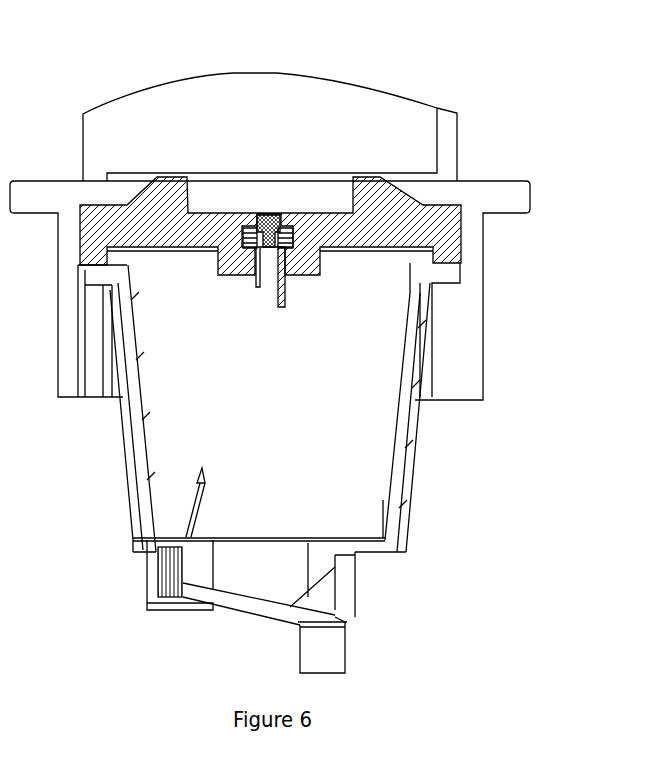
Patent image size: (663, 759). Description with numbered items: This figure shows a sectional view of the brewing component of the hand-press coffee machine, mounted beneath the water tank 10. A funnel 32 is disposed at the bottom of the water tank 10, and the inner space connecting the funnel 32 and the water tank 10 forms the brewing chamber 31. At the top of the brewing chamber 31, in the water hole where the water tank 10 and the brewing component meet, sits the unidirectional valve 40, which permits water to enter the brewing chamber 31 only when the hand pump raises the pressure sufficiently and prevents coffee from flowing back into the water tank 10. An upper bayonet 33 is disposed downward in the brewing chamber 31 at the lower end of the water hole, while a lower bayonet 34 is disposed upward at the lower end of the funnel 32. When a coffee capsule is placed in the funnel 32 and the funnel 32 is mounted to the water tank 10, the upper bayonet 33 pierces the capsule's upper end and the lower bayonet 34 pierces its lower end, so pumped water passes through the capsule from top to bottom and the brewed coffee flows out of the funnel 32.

The water tank 10 is at (288, 103).
The unidirectional valve 40 is at (263, 213).
The upper bayonet 33 is at (285, 293).
The brewing chamber 31 is at (300, 385).
The lower bayonet 34 is at (200, 476).
The funnel 32 is at (345, 578).